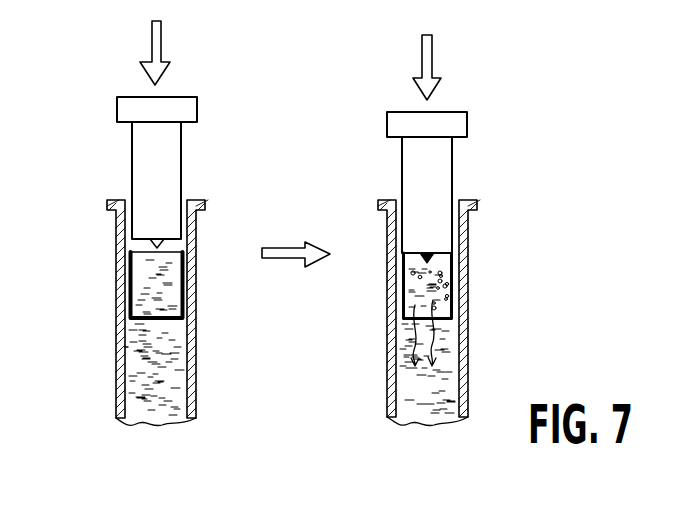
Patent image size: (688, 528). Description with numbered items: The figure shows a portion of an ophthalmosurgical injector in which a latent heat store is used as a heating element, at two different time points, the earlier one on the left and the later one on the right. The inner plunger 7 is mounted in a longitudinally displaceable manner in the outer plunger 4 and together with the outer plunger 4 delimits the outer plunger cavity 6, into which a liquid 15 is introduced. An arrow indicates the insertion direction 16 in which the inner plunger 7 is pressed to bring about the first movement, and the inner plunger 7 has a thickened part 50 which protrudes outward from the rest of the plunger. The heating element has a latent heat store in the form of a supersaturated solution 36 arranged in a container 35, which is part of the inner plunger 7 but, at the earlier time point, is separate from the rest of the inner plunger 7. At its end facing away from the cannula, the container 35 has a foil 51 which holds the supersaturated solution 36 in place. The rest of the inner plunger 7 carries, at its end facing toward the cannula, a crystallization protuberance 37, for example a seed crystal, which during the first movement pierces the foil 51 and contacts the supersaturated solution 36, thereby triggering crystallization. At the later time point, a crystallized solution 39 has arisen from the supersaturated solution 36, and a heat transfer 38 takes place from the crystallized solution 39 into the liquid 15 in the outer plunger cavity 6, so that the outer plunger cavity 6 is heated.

The insertion direction 16 is at (161, 40).
The thickened part 50 is at (197, 107).
The inner plunger 7 is at (181, 148).
The crystallization protuberance 37 is at (157, 247).
The foil 51 is at (165, 252).
The container 35 is at (128, 290).
The supersaturated solution 36 is at (170, 297).
The outer plunger 4 is at (117, 347).
The outer plunger cavity 6 is at (117, 390).
The liquid 15 is at (156, 369).
The crystallized solution 39 is at (445, 290).
The heat transfer 38 is at (455, 337).